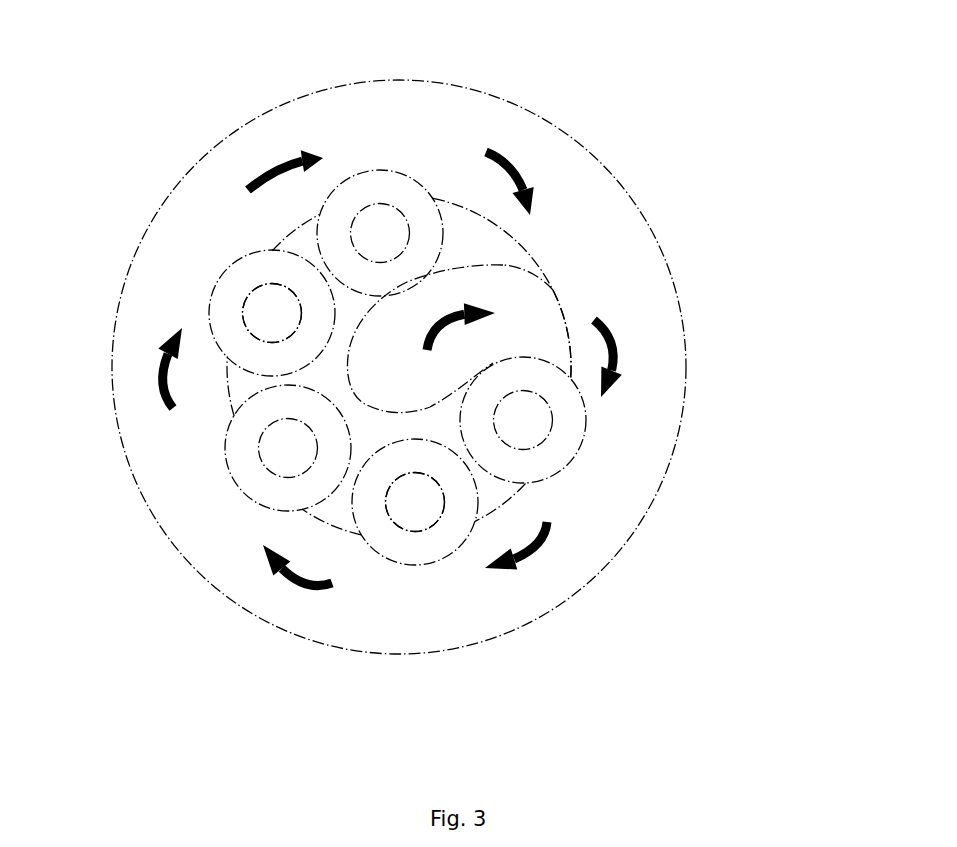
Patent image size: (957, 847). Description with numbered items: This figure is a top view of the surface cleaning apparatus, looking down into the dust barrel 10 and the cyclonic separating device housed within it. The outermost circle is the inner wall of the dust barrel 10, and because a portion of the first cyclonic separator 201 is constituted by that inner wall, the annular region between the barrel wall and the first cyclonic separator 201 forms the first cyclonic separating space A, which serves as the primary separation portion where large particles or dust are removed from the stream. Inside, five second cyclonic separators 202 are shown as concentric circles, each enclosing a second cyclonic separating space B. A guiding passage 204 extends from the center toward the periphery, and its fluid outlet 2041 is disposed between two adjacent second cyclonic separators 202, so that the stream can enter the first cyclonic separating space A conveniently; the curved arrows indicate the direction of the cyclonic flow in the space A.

The dust barrel 10 is at (545, 118).
The first cyclonic separator 201 is at (500, 252).
The second cyclonic separators 202 is at (377, 192).
The guiding passage 204 is at (430, 372).
The fluid outlet 2041 is at (563, 310).
The first cyclonic separating space A is at (623, 430).
The second cyclonic separating spaces B is at (255, 300).